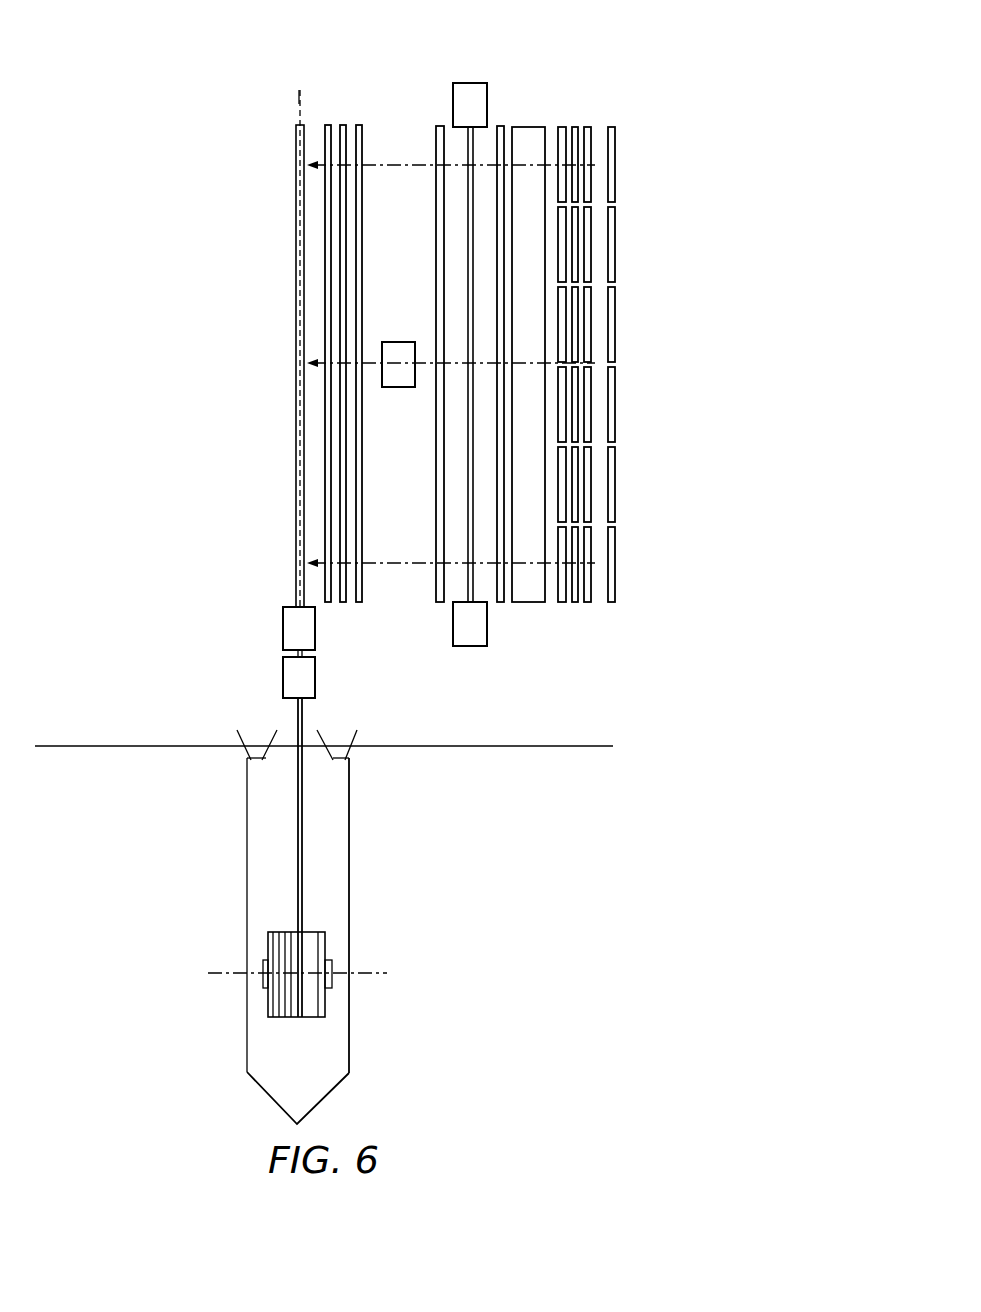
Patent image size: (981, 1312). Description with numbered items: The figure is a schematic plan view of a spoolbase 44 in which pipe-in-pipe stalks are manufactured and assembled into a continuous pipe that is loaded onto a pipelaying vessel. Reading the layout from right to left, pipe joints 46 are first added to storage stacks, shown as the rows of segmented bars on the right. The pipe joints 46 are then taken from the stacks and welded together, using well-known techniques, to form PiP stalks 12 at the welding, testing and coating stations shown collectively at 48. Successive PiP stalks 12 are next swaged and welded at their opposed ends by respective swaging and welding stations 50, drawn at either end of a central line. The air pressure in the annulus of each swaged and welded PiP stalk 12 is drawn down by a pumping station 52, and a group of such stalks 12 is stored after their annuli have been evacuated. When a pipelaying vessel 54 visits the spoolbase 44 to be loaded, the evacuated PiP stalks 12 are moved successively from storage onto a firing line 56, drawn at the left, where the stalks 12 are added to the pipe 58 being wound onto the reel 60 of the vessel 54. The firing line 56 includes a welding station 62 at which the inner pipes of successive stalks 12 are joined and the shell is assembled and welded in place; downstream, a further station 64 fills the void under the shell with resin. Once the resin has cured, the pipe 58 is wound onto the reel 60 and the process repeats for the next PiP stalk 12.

The PiP stalk 12 is at (436, 132).
The spoolbase 44 is at (210, 251).
The pipe joints 46 is at (591, 267).
The welding, testing and coating stations 48 is at (523, 127).
The swaging and welding stations 50 is at (471, 83).
The pumping station 52 is at (396, 342).
The pipelaying vessel 54 is at (210, 807).
The firing line 56 is at (298, 97).
The pipe 58 is at (303, 810).
The reel 60 is at (312, 945).
The welding station 62 is at (283, 617).
The further station 64 is at (283, 667).